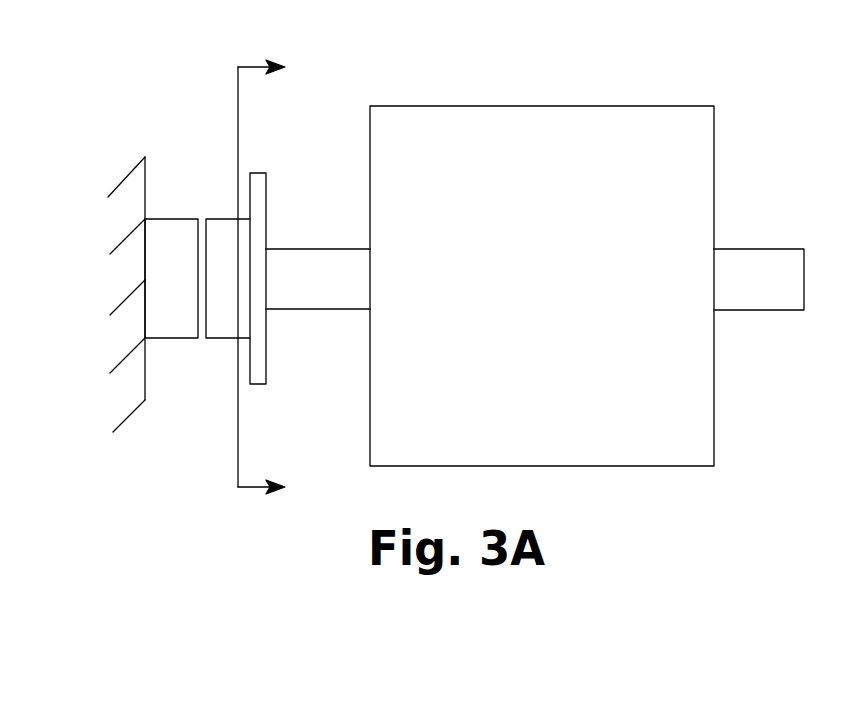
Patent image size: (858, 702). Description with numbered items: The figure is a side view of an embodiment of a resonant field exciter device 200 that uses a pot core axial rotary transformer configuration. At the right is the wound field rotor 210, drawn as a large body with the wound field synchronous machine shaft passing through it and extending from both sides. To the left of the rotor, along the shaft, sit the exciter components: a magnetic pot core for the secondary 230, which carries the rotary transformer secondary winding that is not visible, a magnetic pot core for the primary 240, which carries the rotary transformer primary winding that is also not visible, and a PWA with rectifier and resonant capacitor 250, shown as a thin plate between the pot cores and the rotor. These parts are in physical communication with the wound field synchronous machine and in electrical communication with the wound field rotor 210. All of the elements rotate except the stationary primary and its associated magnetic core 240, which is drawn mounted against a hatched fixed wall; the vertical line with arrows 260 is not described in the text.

The resonant field exciter device 200 is at (380, 80).
The wound field rotor 210 is at (696, 172).
The magnetic pot core for the secondary 230 is at (215, 318).
The magnetic pot core for the primary 240 is at (170, 238).
The PWA with rectifier and resonant capacitor 250 is at (258, 204).
The reference axis 260 is at (238, 85).